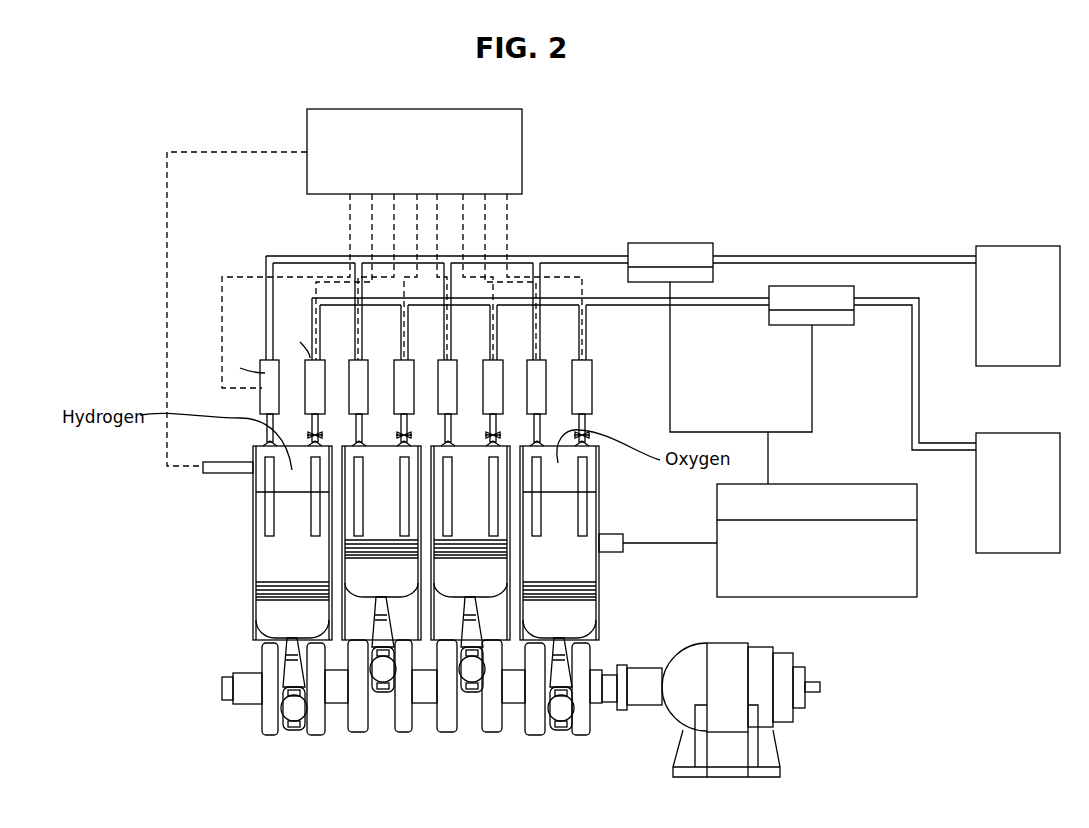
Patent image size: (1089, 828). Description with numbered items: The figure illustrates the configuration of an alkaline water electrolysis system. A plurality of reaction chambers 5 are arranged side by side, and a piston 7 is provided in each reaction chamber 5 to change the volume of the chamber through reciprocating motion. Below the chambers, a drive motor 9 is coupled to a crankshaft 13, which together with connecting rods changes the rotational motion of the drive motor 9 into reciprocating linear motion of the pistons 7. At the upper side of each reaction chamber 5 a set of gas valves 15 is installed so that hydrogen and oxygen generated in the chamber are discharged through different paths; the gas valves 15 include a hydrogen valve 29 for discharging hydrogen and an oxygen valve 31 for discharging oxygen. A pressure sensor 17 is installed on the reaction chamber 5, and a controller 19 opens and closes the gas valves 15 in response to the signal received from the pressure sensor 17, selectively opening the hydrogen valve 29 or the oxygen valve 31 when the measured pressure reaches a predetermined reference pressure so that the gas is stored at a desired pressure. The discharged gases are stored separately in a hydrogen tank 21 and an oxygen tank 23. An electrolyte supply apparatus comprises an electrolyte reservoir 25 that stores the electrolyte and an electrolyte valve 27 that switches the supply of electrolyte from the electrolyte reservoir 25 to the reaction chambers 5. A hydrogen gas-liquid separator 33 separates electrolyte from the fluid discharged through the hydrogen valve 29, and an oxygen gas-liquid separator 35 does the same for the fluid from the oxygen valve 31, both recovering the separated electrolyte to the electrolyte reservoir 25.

The reaction chamber 5 is at (253, 485).
The piston 7 is at (255, 608).
The drive motor 9 is at (787, 717).
The crankshaft 13 is at (247, 698).
The gas valves 15 is at (101, 325).
The pressure sensor 17 is at (227, 462).
The controller 19 is at (522, 150).
The hydrogen tank 21 is at (1016, 553).
The oxygen tank 23 is at (1016, 246).
The electrolyte reservoir 25 is at (868, 597).
The electrolyte valve 27 is at (610, 534).
The hydrogen valve 29 is at (300, 342).
The oxygen valve 31 is at (240, 368).
The hydrogen gas-liquid separator 33 is at (812, 286).
The oxygen gas-liquid separator 35 is at (670, 243).